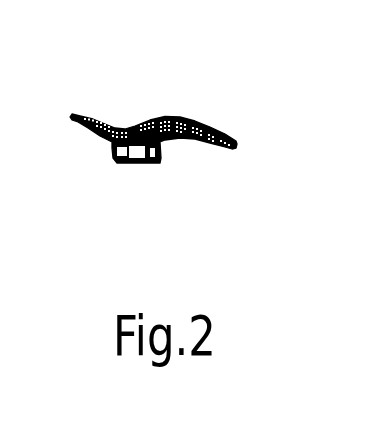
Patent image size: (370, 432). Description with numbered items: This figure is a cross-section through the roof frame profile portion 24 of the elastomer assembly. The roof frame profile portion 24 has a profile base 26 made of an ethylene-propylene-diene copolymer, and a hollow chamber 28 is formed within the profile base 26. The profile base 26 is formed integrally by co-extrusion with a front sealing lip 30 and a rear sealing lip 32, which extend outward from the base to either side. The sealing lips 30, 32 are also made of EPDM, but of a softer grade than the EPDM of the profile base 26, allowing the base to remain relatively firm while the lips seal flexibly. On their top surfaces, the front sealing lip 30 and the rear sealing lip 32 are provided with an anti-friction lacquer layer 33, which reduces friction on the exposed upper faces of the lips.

The roof frame profile portion 24 is at (152, 77).
The front sealing lip 30 is at (82, 115).
The rear sealing lip 32 is at (227, 133).
The anti-friction lacquer layer 33 is at (191, 120).
The profile base 26 is at (120, 162).
The hollow chamber 28 is at (137, 163).